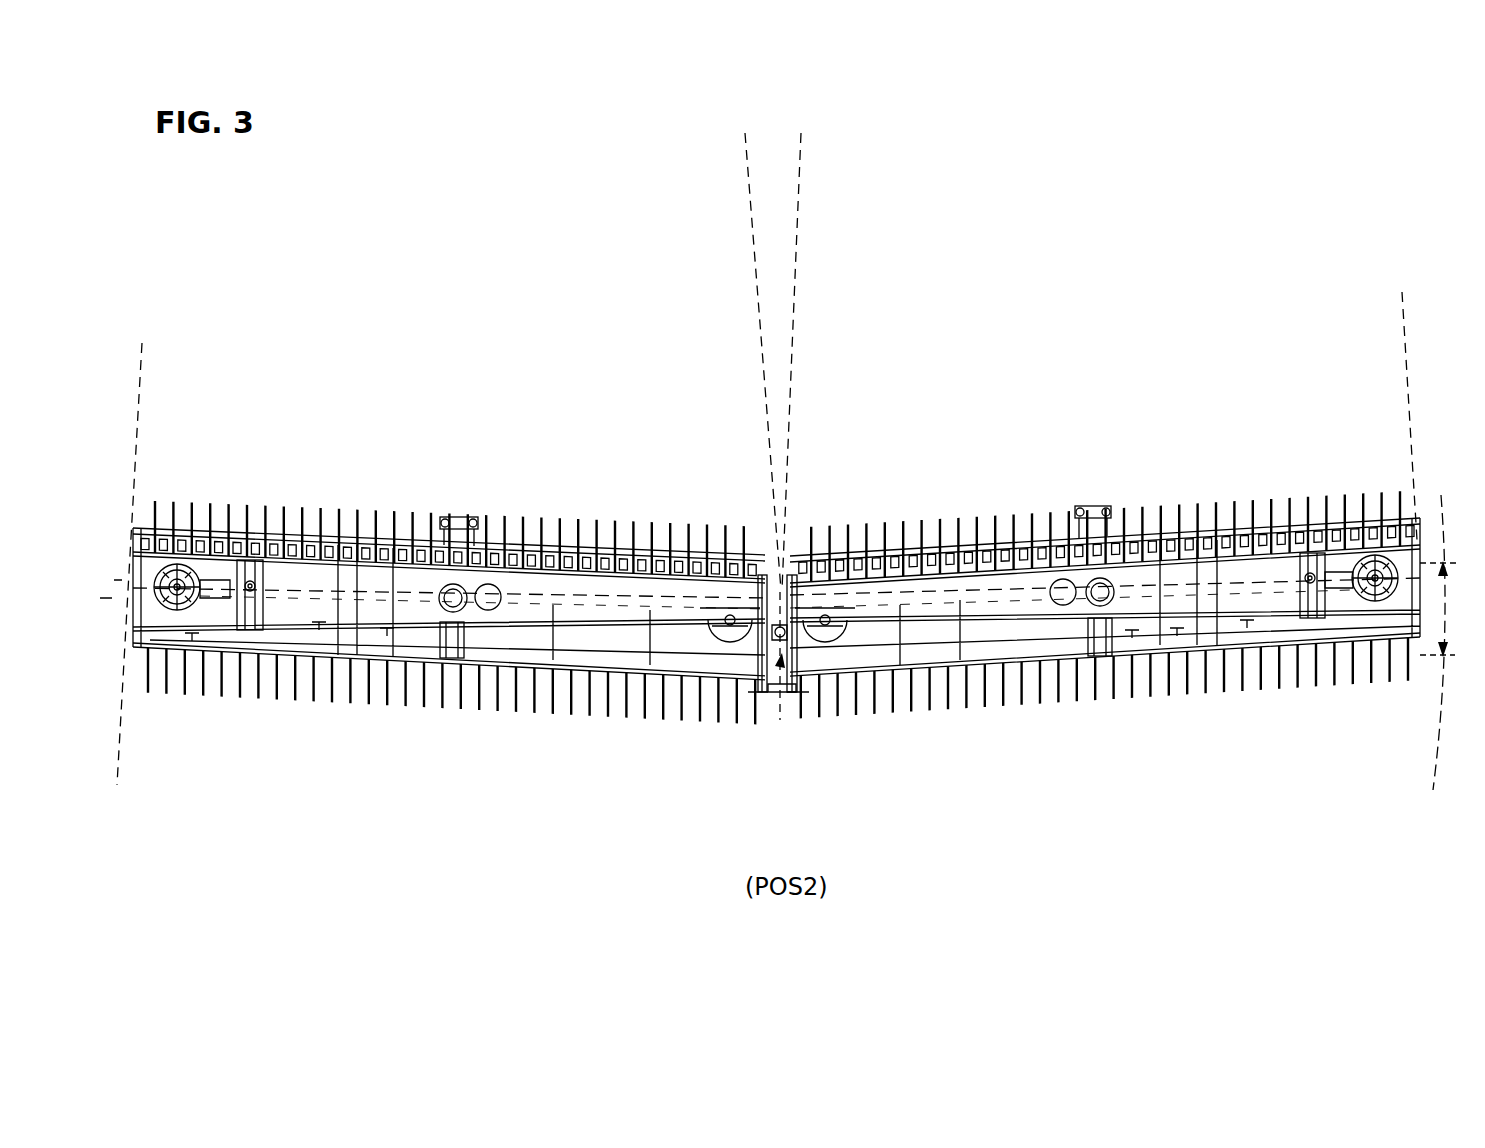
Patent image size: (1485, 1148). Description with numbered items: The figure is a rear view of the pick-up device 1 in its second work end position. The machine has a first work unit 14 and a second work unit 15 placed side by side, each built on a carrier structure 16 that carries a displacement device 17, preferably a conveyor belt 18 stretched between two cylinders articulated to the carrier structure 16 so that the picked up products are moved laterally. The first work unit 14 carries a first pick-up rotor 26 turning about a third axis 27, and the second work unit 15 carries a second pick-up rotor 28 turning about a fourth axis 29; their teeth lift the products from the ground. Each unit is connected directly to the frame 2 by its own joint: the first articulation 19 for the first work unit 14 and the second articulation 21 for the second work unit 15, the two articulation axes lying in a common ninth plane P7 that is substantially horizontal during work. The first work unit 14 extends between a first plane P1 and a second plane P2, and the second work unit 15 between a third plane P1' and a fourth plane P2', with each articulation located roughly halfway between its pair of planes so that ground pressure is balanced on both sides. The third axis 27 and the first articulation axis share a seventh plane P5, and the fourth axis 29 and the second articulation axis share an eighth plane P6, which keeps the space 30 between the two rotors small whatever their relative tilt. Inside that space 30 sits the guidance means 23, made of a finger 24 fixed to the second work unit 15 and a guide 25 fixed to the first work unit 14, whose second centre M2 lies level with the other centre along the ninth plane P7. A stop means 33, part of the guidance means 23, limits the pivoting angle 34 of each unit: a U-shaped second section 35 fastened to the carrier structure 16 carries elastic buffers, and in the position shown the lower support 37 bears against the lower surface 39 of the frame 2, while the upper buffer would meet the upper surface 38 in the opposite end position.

The pick-up device 1 is at (847, 528).
The frame 2 is at (813, 615).
The first work unit 14 is at (302, 505).
The second work unit 15 is at (1250, 497).
The carrier structure 16 is at (272, 597).
The displacement device 17 is at (388, 640).
The conveyor belt 18 is at (313, 620).
The first articulation 19 is at (462, 660).
The second articulation 21 is at (1113, 623).
The guidance means 23 is at (788, 635).
The finger 24 is at (780, 623).
The guide 25 is at (777, 623).
The first pick-up rotor 26 is at (491, 521).
The third axis 27 is at (650, 608).
The second pick-up rotor 28 is at (1066, 518).
The fourth axis 29 is at (957, 603).
The space 30 is at (779, 692).
The stop means 33 is at (538, 655).
The pivoting angle 34 is at (1436, 705).
The second section 35 is at (575, 640).
The support 37 is at (548, 625).
The upper surface 38 is at (1085, 642).
The lower surface 39 is at (1050, 628).
The second centre M2 is at (781, 655).
The first plane P1 is at (808, 426).
The third plane P1' is at (742, 361).
The second plane P2 is at (138, 564).
The fourth plane P2' is at (1387, 411).
The seventh plane P5 is at (600, 605).
The eighth plane P6 is at (908, 600).
The ninth plane P7 is at (708, 598).